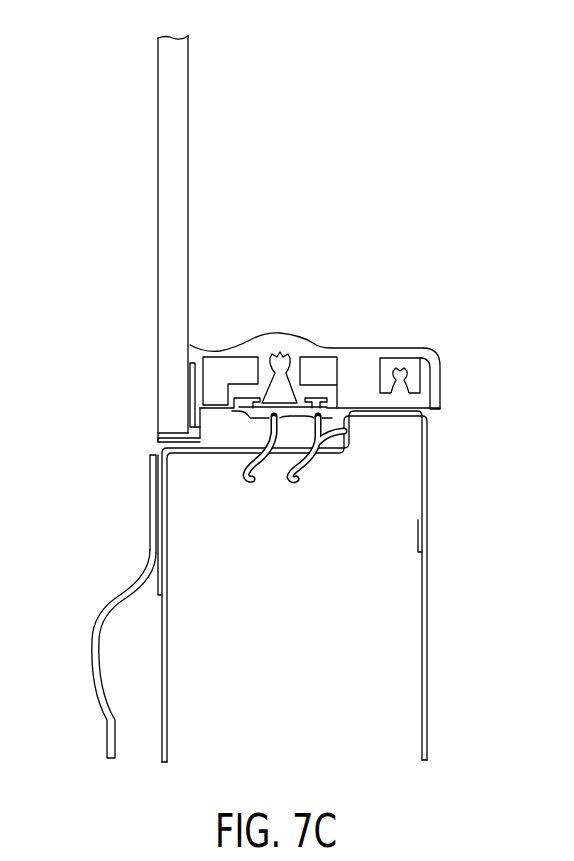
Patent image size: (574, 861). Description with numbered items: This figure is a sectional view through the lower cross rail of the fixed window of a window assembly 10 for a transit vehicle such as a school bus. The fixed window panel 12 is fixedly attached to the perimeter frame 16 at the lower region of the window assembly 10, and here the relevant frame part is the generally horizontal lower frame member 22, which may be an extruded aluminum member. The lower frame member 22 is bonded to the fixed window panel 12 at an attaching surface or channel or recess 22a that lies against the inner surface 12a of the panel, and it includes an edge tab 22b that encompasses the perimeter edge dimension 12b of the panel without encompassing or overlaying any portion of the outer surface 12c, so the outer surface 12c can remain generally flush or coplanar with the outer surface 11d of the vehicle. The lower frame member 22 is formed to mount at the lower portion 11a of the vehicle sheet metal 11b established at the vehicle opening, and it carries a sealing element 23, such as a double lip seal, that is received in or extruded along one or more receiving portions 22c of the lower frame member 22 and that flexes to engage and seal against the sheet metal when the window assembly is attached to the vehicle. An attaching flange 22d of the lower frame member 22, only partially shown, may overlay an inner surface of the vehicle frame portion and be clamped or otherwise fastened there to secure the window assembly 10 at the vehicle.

The window assembly 10 is at (335, 54).
The lower portion of the vehicle sheet metal 11a is at (207, 508).
The vehicle sheet metal 11b is at (100, 556).
The outer surface of the transit vehicle 11d is at (149, 552).
The fixed window panel 12 is at (175, 187).
The inner surface of the window panel 12a is at (190, 240).
The perimeter edge dimension of the window panel 12b is at (185, 432).
The outer surface of the window panel 12c is at (158, 297).
The perimeter frame 16 is at (414, 253).
The lower frame member 22 is at (320, 318).
The attaching surface 22a is at (191, 392).
The edge tab 22b is at (160, 444).
The receiving portion 22c is at (312, 396).
The attaching flange 22d is at (442, 389).
The sealing element 23 is at (300, 489).